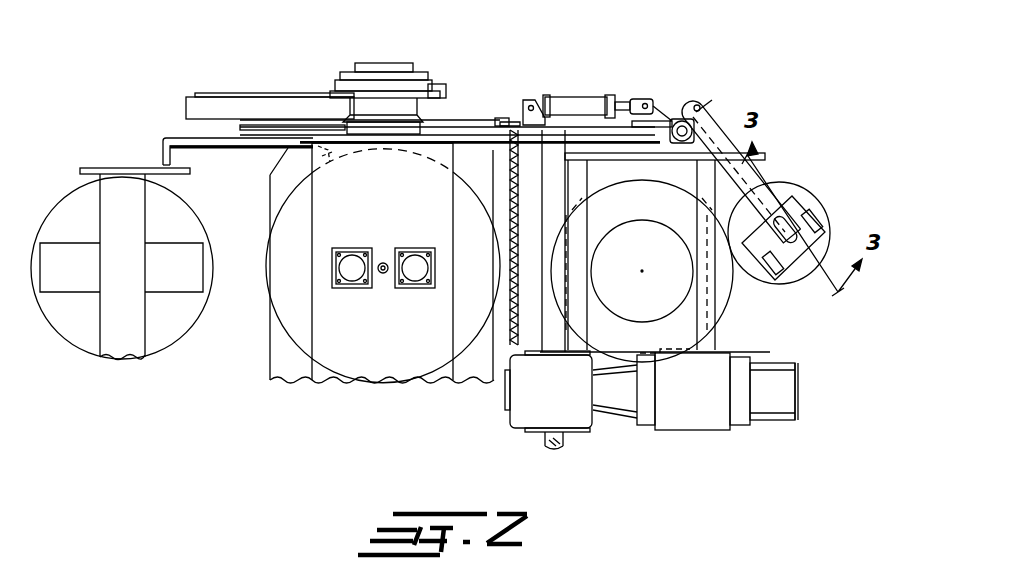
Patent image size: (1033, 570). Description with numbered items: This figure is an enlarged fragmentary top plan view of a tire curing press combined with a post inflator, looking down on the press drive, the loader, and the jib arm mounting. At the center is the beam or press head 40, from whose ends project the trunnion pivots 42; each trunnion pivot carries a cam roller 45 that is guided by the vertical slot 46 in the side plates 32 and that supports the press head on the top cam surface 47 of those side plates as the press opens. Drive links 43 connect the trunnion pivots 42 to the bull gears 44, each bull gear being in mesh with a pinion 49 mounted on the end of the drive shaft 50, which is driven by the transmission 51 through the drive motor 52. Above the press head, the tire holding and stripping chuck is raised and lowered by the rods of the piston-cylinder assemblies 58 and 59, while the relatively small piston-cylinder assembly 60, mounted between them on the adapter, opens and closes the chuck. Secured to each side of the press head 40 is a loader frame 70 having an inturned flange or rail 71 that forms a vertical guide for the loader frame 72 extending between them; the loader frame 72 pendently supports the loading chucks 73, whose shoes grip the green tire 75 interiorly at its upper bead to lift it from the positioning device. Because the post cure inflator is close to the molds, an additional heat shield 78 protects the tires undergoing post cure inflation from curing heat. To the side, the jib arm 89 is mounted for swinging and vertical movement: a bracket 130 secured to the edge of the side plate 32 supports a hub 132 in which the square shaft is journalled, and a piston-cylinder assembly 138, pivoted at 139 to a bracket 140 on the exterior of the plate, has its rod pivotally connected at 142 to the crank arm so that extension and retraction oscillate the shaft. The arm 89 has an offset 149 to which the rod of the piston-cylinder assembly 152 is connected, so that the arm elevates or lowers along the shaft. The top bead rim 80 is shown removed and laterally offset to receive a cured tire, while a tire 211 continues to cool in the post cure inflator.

The side plates 32 is at (252, 135).
The press head 40 is at (355, 378).
The trunnion pivots 42 is at (382, 63).
The drive links 43 is at (436, 84).
The bull gears 44 is at (206, 110).
The cam roller 45 is at (387, 134).
The vertical slot 46 is at (342, 126).
The top cam surface 47 is at (497, 122).
The pinion 49 is at (568, 96).
The drive shaft 50 is at (548, 445).
The transmission 51 is at (582, 416).
The drive motor 52 is at (790, 372).
The piston-cylinder assembly 58 is at (352, 250).
The piston-cylinder assembly 59 is at (415, 250).
The piston-cylinder assembly 60 is at (383, 262).
The loader frame 70 is at (178, 137).
The inturned flange or rail 71 is at (163, 155).
The loader frame 72 is at (110, 354).
The loading chucks 73 is at (85, 168).
The green tire 75 is at (178, 351).
The heat shield 78 is at (508, 175).
The top bead rim 80 is at (820, 197).
The jib arm 89 is at (760, 174).
The bracket 130 is at (672, 124).
The hub 132 is at (684, 120).
The piston-cylinder assembly 138 is at (590, 97).
The pivot 139 is at (537, 102).
The bracket 140 is at (522, 108).
The pivot connection 142 is at (645, 103).
The offset 149 is at (714, 118).
The piston-cylinder assembly 152 is at (700, 104).
The tire 211 is at (712, 322).